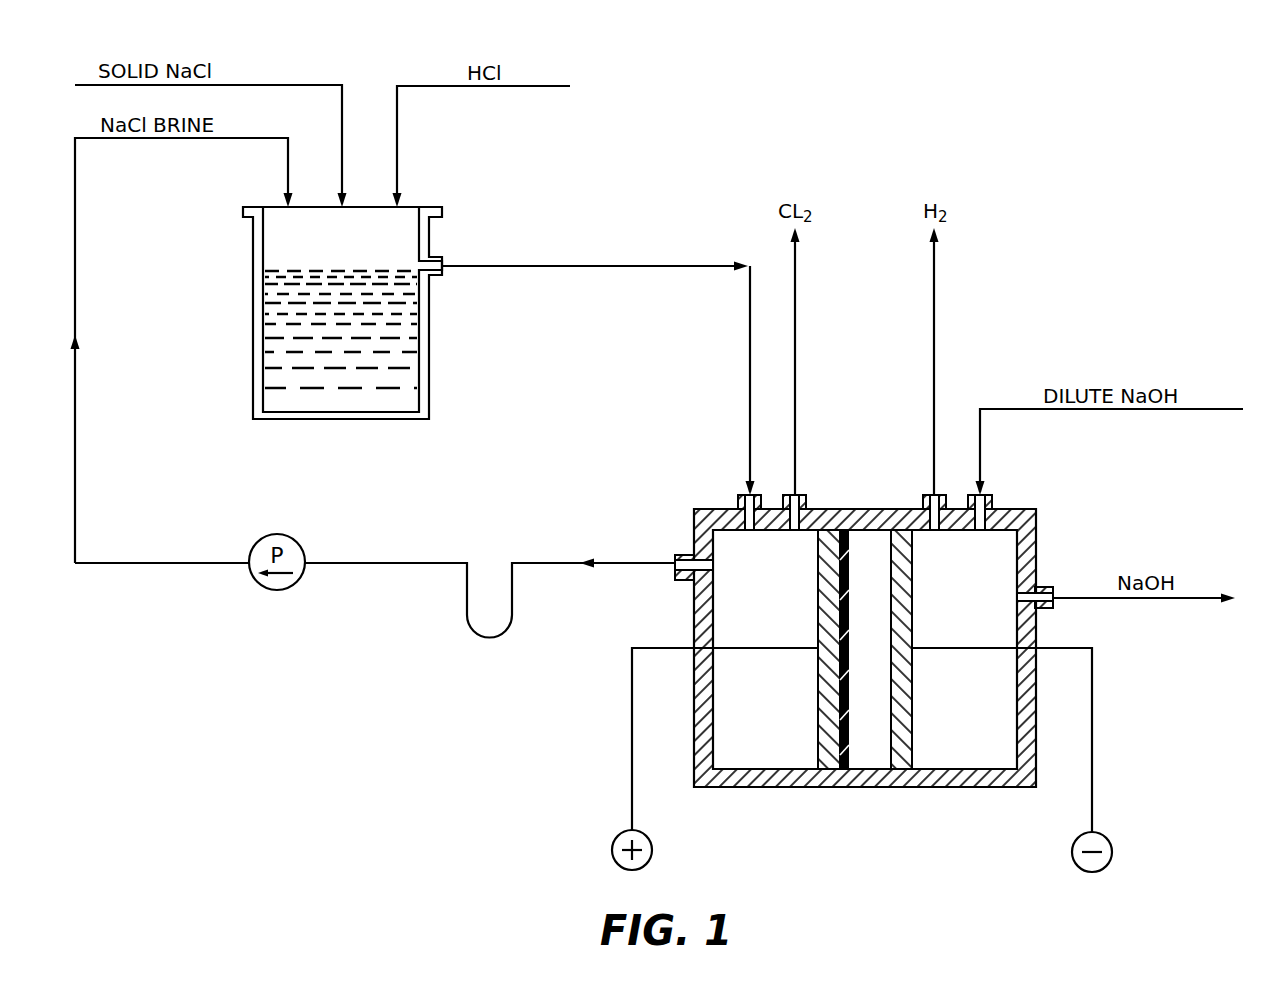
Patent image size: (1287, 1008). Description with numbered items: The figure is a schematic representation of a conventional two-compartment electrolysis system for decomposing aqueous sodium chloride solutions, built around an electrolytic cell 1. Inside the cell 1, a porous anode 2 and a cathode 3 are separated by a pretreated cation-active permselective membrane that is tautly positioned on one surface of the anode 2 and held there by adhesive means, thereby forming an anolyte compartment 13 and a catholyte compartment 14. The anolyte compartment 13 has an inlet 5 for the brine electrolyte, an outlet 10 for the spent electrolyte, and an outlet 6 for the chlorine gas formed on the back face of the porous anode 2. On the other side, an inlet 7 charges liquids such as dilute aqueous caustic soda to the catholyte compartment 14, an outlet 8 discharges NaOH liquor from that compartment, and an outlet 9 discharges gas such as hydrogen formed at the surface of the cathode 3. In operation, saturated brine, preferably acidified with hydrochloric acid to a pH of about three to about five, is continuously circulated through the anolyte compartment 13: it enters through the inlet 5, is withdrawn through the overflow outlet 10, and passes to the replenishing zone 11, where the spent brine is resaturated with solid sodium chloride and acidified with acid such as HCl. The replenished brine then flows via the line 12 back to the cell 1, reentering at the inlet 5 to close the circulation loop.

The electrolytic cell 1 is at (876, 764).
The porous anode 2 is at (818, 600).
The cathode 3 is at (912, 600).
The inlet 5 is at (740, 497).
The outlet 6 is at (806, 500).
The inlet 7 is at (992, 500).
The outlet 8 is at (1050, 587).
The outlet 9 is at (923, 498).
The outlet 10 is at (680, 555).
The replenishing zone 11 is at (253, 334).
The line 12 is at (558, 266).
The anolyte compartment 13 is at (782, 762).
The catholyte compartment 14 is at (937, 763).